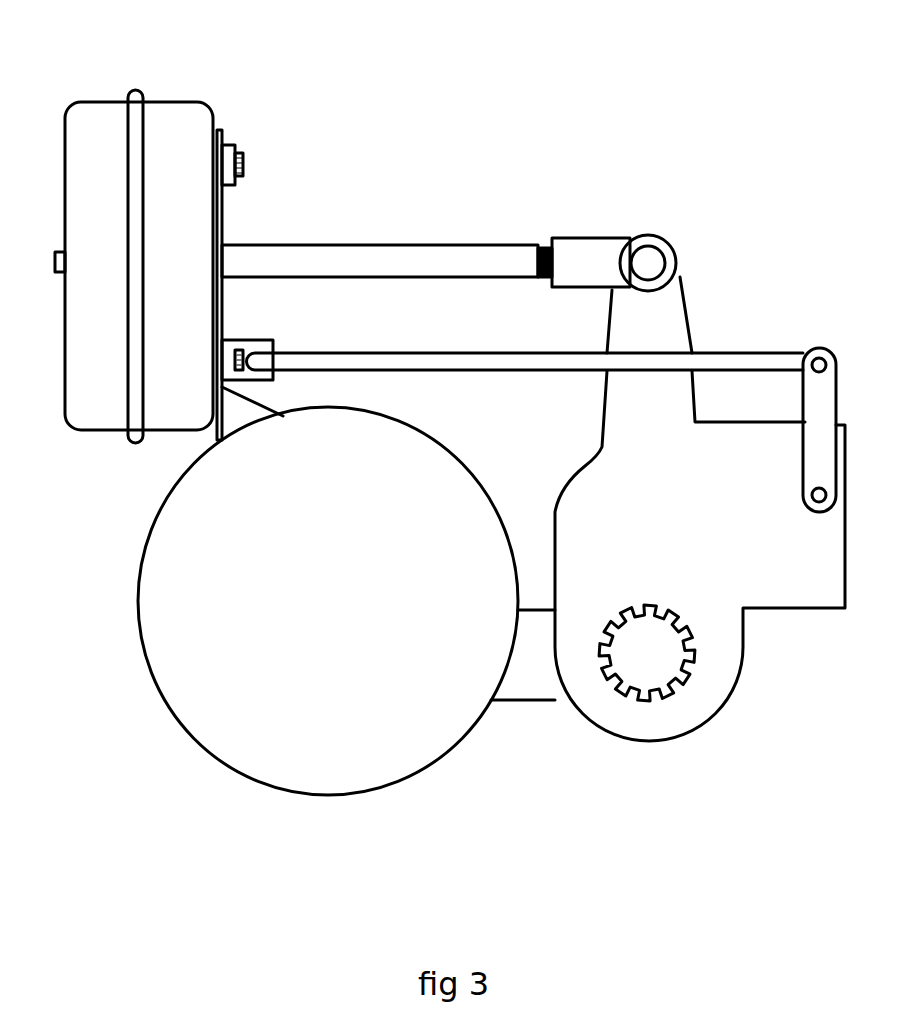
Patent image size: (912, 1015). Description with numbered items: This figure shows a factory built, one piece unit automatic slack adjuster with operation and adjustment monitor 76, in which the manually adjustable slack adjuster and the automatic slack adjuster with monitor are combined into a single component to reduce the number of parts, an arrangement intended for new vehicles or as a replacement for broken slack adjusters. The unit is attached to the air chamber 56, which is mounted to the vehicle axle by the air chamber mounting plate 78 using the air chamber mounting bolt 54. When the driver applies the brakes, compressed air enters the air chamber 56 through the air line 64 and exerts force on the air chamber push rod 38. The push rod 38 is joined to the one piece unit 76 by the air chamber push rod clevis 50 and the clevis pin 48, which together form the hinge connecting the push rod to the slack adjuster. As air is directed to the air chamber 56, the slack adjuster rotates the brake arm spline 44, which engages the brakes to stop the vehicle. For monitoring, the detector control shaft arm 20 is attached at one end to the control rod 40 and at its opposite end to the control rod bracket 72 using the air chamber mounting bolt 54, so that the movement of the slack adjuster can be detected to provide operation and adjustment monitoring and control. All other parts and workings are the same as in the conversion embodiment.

The detector control shaft arm 20 is at (817, 408).
The air chamber push rod 38 is at (475, 260).
The control rod 40 is at (385, 360).
The brake arm spline 44 is at (637, 662).
The clevis pin 48 is at (648, 263).
The air chamber push rod clevis 50 is at (580, 248).
The air chamber mounting bolt 54 is at (230, 150).
The air chamber 56 is at (177, 135).
The air line 64 is at (60, 252).
The control rod bracket 72 is at (250, 340).
The factory built one piece unit automatic slack adjuster with operation and adjustm 76 is at (742, 570).
The air chamber mounting plate 78 is at (338, 732).